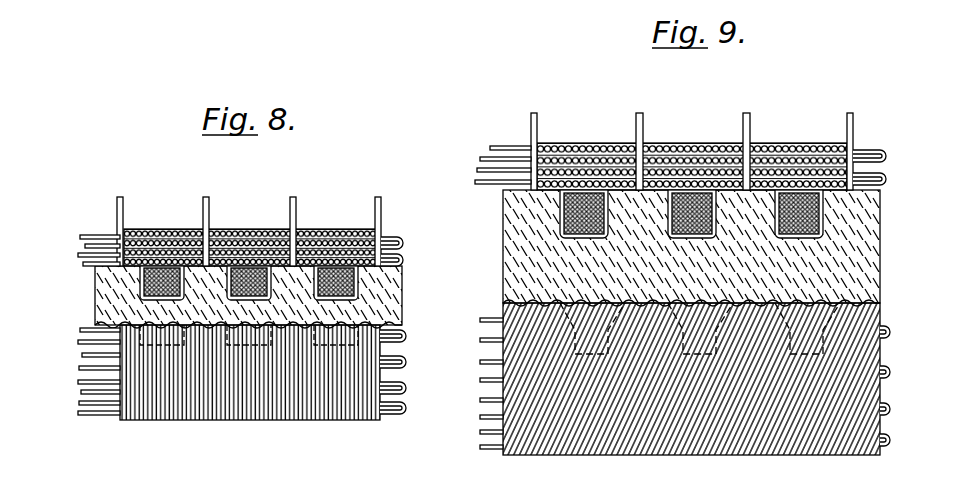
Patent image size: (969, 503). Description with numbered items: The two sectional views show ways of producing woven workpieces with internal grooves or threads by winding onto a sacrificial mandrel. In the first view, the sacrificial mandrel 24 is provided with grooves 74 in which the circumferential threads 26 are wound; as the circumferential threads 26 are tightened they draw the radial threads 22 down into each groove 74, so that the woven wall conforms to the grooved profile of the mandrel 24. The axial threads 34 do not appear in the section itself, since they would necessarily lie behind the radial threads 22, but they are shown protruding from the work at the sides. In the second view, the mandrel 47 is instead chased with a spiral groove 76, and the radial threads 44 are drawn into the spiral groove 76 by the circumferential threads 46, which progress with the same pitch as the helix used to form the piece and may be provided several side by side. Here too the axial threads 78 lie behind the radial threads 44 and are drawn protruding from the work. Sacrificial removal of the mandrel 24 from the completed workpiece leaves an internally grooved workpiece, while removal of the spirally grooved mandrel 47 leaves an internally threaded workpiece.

In FIG. 8, the radial threads 22 is at (122, 205).
In FIG. 8, the mandrel 24 is at (402, 302).
In FIG. 8, the circumferential thread 26 is at (243, 229).
In FIG. 8, the axial threads 34 is at (80, 237).
In FIG. 8, the grooves 74 is at (140, 289).
In FIG. 9, the radial threads 44 is at (537, 127).
In FIG. 9, the circumferential threads 46 is at (688, 143).
In FIG. 9, the mandrel 47 is at (863, 263).
In FIG. 9, the spiral groove 76 is at (558, 223).
In FIG. 9, the axial threads 78 is at (477, 186).